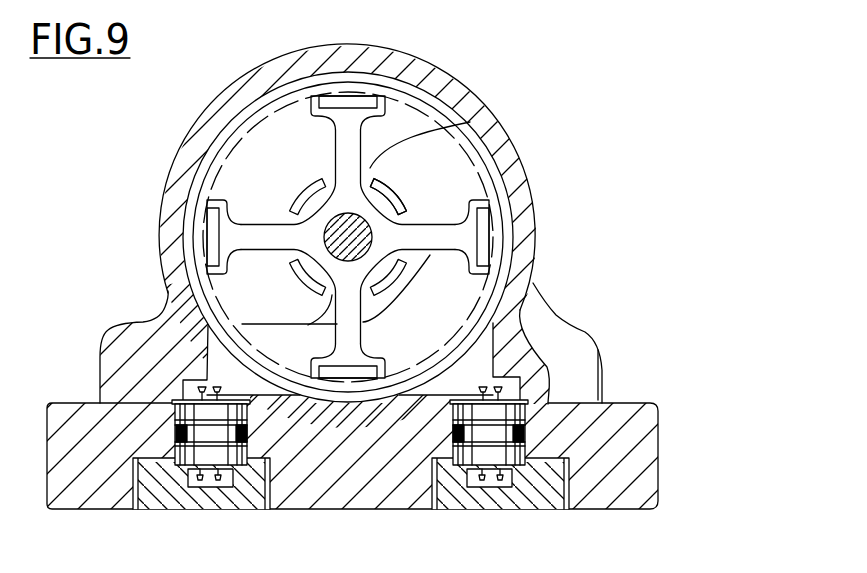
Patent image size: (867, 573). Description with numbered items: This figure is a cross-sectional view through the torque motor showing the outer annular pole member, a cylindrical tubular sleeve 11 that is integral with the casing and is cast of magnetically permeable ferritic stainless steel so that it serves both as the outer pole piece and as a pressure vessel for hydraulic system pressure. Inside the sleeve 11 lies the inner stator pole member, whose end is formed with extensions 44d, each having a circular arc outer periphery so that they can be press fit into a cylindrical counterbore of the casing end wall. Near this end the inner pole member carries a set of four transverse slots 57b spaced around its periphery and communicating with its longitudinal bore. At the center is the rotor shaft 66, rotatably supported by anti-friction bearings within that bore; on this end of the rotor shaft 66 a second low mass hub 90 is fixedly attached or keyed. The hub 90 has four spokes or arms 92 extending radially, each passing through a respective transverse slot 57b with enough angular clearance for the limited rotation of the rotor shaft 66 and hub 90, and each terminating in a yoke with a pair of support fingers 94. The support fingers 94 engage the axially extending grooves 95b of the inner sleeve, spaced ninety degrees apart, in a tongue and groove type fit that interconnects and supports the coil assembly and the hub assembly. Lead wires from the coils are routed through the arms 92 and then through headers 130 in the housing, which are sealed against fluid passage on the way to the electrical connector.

The cylindrical tubular sleeve 11 is at (497, 137).
The extensions 44d is at (309, 185).
The transverse slots 57b is at (293, 212).
The rotor shaft 66 is at (372, 237).
The second low mass hub 90 is at (382, 210).
The spokes or arms 92 is at (363, 143).
The support fingers 94 is at (317, 95).
The axially extending grooves 95b is at (360, 97).
The headers 130 is at (173, 404).